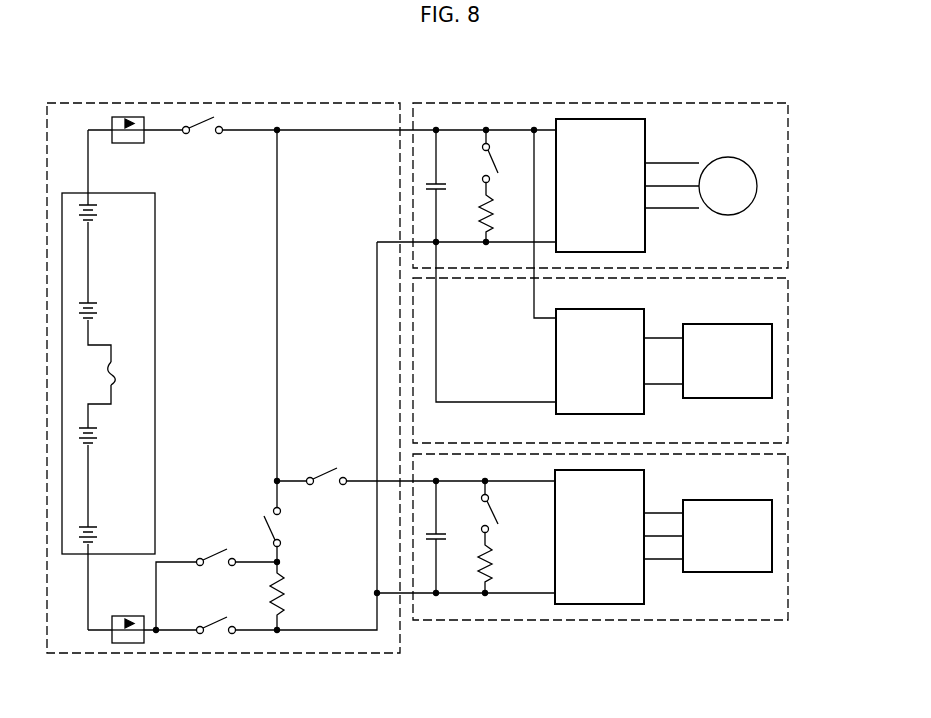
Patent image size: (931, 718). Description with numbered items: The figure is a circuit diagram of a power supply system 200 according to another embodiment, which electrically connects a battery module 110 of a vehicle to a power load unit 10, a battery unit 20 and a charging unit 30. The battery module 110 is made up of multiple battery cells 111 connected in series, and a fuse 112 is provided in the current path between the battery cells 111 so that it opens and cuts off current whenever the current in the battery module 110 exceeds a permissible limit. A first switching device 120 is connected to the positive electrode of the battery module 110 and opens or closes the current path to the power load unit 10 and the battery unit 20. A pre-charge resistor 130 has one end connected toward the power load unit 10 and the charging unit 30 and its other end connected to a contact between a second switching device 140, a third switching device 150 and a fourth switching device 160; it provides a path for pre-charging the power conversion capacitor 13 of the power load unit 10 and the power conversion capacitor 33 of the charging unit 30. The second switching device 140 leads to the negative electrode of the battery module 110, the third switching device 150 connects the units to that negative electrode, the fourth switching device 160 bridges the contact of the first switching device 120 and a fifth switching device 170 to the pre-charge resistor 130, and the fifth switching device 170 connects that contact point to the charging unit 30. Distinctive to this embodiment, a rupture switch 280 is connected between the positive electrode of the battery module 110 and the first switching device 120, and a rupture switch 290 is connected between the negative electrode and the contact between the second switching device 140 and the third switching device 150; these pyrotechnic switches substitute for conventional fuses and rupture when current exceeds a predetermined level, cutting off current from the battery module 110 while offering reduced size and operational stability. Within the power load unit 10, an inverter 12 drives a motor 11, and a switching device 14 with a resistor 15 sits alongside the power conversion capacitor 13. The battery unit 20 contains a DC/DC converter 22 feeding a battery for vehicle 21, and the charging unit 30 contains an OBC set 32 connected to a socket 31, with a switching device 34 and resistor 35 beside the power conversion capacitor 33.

The power supply system 200 is at (399, 103).
The power load unit 10 is at (796, 114).
The battery unit 20 is at (796, 291).
The charging unit 30 is at (796, 466).
The battery module 110 is at (155, 233).
The battery cell 111 is at (97, 213).
The fuse 112 is at (114, 373).
The first switching device 120 is at (202, 137).
The pre-charge resistor 130 is at (283, 592).
The second switching device 140 is at (215, 551).
The third switching device 150 is at (215, 618).
The fourth switching device 160 is at (283, 527).
The fifth switching device 170 is at (326, 469).
The rupture switch 280 is at (128, 144).
The rupture switch 290 is at (128, 614).
The motor 11 is at (728, 216).
The inverter 12 is at (646, 130).
The power conversion capacitor 13 is at (443, 190).
The switching device 14 is at (492, 157).
The resistor 15 is at (492, 212).
The battery for vehicle 21 is at (727, 399).
The DC/DC converter 22 is at (645, 309).
The socket 31 is at (727, 573).
The OBC set 32 is at (645, 482).
The power conversion capacitor 33 is at (443, 540).
The switching device 34 is at (492, 507).
The resistor 35 is at (492, 562).